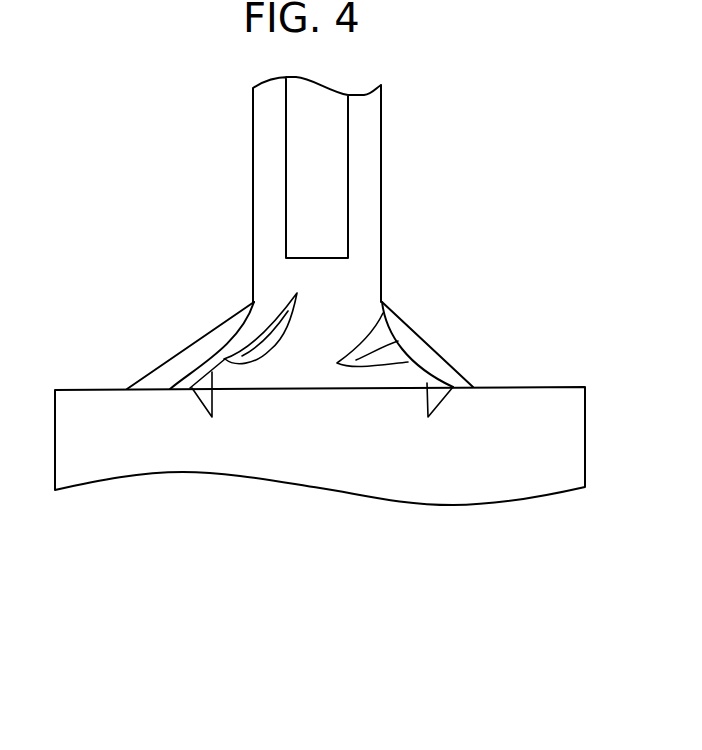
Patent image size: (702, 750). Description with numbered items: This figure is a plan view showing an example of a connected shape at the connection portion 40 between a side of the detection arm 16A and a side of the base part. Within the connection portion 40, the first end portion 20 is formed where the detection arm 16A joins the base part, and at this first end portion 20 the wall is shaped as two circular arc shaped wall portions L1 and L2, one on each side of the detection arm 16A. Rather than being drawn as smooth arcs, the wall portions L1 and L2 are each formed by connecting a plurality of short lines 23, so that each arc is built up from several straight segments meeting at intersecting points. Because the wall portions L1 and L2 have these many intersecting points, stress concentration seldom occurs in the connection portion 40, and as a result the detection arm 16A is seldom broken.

The detection arm 16A is at (372, 182).
The first end portion 20 is at (237, 335).
The short lines 23 is at (321, 362).
The connection portion 40 is at (188, 339).
The circular arc shaped wall portion L1 is at (230, 367).
The circular arc shaped wall portion L2 is at (410, 372).